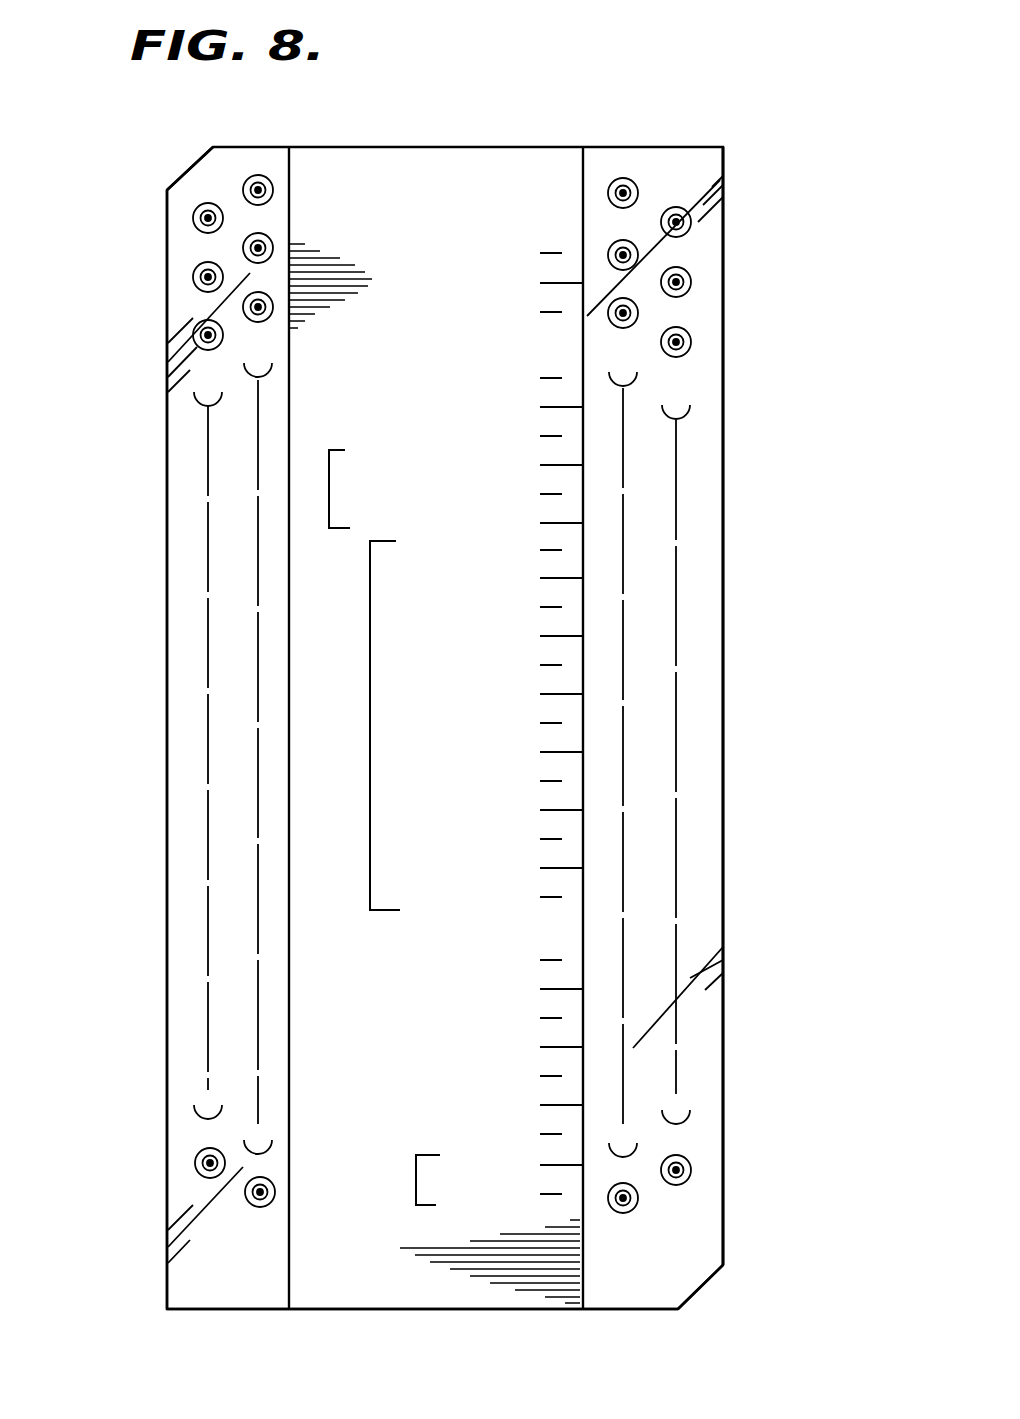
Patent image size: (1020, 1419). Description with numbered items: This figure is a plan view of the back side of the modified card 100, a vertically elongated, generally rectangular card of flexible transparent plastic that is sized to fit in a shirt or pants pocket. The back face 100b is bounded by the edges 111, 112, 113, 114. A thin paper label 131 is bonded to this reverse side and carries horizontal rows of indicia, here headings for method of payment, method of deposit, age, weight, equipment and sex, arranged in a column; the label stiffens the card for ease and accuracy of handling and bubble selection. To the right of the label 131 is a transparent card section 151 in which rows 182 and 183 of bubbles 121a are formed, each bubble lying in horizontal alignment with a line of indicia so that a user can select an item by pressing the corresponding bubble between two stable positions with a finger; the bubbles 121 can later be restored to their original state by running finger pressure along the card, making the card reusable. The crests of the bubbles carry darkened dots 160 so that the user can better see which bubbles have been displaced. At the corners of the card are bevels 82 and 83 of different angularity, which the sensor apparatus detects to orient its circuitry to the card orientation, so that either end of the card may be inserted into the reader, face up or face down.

The bevel 82 is at (180, 177).
The bevel 83 is at (700, 1289).
The modified card 100 is at (795, 178).
The face 100b is at (705, 612).
The edge 111 is at (723, 840).
The edge 112 is at (168, 790).
The edge 113 is at (338, 147).
The edge 114 is at (415, 1310).
The bubbles 121 is at (193, 333).
The bubbles 121a is at (691, 278).
The label 131 is at (415, 180).
The card section 151 is at (700, 437).
The darkened dots 160 is at (693, 340).
The row of bubbles 182 is at (618, 173).
The row of bubbles 183 is at (688, 196).